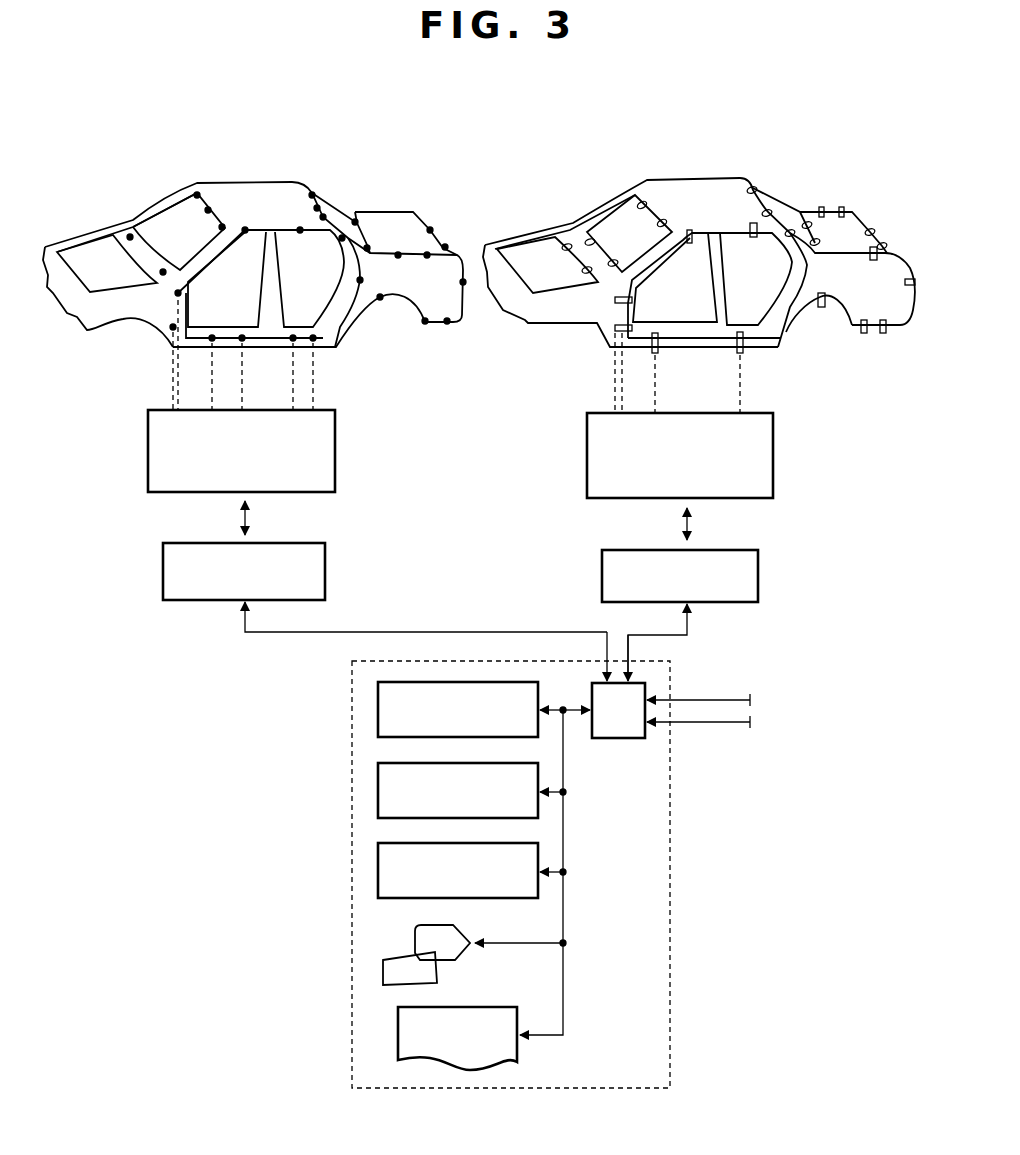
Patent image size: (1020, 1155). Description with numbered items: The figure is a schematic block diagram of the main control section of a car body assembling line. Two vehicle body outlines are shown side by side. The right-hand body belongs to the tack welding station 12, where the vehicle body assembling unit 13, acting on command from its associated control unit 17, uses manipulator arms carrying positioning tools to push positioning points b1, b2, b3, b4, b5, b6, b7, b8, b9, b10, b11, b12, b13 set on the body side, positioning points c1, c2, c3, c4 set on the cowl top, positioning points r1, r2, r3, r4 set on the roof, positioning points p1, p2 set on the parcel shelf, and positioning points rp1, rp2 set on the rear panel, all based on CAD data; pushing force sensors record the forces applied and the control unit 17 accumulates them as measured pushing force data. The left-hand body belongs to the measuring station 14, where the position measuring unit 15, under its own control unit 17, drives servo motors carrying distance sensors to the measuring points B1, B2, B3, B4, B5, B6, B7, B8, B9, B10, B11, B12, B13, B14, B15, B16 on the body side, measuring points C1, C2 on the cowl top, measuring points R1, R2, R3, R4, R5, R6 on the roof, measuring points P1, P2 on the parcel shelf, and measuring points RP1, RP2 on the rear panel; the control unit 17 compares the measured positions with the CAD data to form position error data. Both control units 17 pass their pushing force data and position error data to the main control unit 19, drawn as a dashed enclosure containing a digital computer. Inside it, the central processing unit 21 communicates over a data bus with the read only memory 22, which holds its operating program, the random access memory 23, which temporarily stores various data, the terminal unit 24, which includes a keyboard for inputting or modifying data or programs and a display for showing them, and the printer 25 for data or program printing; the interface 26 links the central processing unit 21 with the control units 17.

The tack welding station 12 is at (676, 171).
The vehicle body assembling unit 13 is at (774, 453).
The measuring station 14 is at (286, 166).
The position measuring unit 15 is at (336, 448).
The control unit 17 is at (326, 572).
The main control unit 19 is at (670, 743).
The central processing unit 21 is at (378, 783).
The read only memory 22 is at (378, 705).
The random access memory 23 is at (378, 860).
The terminal unit 24 is at (383, 972).
The printer 25 is at (398, 1032).
The interface 26 is at (615, 738).
The measuring point R1 is at (197, 195).
The measuring point R2 is at (208, 210).
The measuring point R3 is at (222, 227).
The measuring point R4 is at (312, 195).
The roof measuring point R5 is at (317, 208).
The roof measuring point R6 is at (323, 217).
The measuring point P1 is at (355, 222).
The measuring point P2 is at (367, 248).
The measuring point RP1 is at (430, 230).
The measuring point RP2 is at (445, 247).
The measuring point C1 is at (130, 237).
The measuring point C2 is at (163, 272).
The measuring point B1 is at (178, 293).
The measuring point B2 is at (173, 327).
The measuring point B3 is at (212, 338).
The measuring point B4 is at (242, 338).
The measuring point B5 is at (293, 338).
The measuring point B6 is at (313, 338).
The measuring point B7 is at (360, 280).
The measuring point B8 is at (380, 297).
The measuring point B9 is at (425, 321).
The measuring point B10 is at (447, 321).
The measuring point B11 is at (245, 230).
The measuring point B12 is at (300, 230).
The measuring point B13 is at (342, 238).
The measuring point B14 is at (398, 255).
The measuring point B15 is at (427, 255).
The measuring point B16 is at (463, 282).
The positioning point r1 is at (642, 205).
The positioning point r2 is at (662, 223).
The positioning point r3 is at (752, 190).
The positioning point r4 is at (768, 213).
The positioning point p1 is at (807, 225).
The positioning point p2 is at (816, 242).
The positioning point rp1 is at (870, 232).
The positioning point rp2 is at (882, 246).
The positioning point c1 is at (567, 247).
The positioning point c2 is at (587, 270).
The positioning point c3 is at (590, 242).
The positioning point c4 is at (613, 263).
The positioning point b1 is at (632, 300).
The positioning point b2 is at (615, 328).
The positioning point b3 is at (658, 347).
The positioning point b4 is at (740, 353).
The positioning point b5 is at (822, 307).
The positioning point b6 is at (863, 333).
The positioning point b7 is at (883, 333).
The positioning point b8 is at (689, 243).
The positioning point b9 is at (753, 237).
The positioning point b10 is at (793, 237).
The positioning point b11 is at (847, 303).
The positioning point b12 is at (873, 260).
The positioning point b13 is at (910, 285).